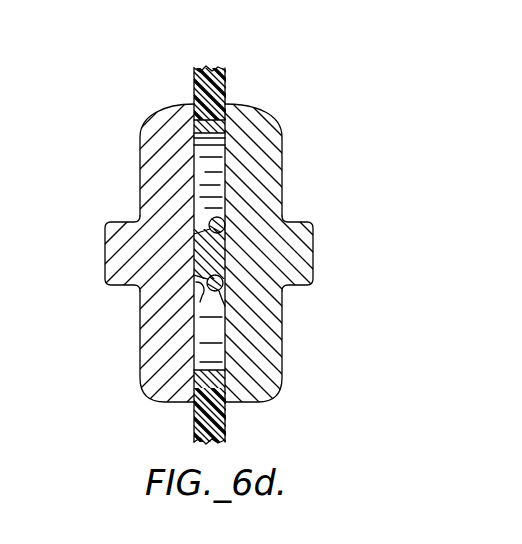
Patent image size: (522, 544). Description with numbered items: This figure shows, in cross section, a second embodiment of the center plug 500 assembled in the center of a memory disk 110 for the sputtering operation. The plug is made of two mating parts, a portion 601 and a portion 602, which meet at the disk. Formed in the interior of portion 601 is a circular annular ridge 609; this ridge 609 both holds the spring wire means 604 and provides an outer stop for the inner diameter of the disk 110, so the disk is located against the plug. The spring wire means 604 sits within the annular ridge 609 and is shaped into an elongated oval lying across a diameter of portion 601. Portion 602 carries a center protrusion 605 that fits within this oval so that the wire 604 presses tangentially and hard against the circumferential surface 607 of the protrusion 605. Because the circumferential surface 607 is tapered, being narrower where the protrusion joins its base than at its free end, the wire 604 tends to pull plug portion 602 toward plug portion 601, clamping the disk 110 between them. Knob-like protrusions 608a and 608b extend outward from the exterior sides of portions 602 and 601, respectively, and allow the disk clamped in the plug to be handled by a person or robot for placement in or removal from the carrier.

The center plug 500 is at (153, 90).
The disk 110 is at (226, 77).
The portion of the center plug 601 is at (147, 127).
The portion of the plug 602 is at (260, 127).
The spring wire means 604 is at (222, 208).
The center protrusion 605 is at (198, 246).
The circumferential surface 607 is at (203, 312).
The knob-like protrusion 608a is at (313, 250).
The knob-like protrusion 608b is at (105, 249).
The circular annular ridge 609 is at (226, 122).